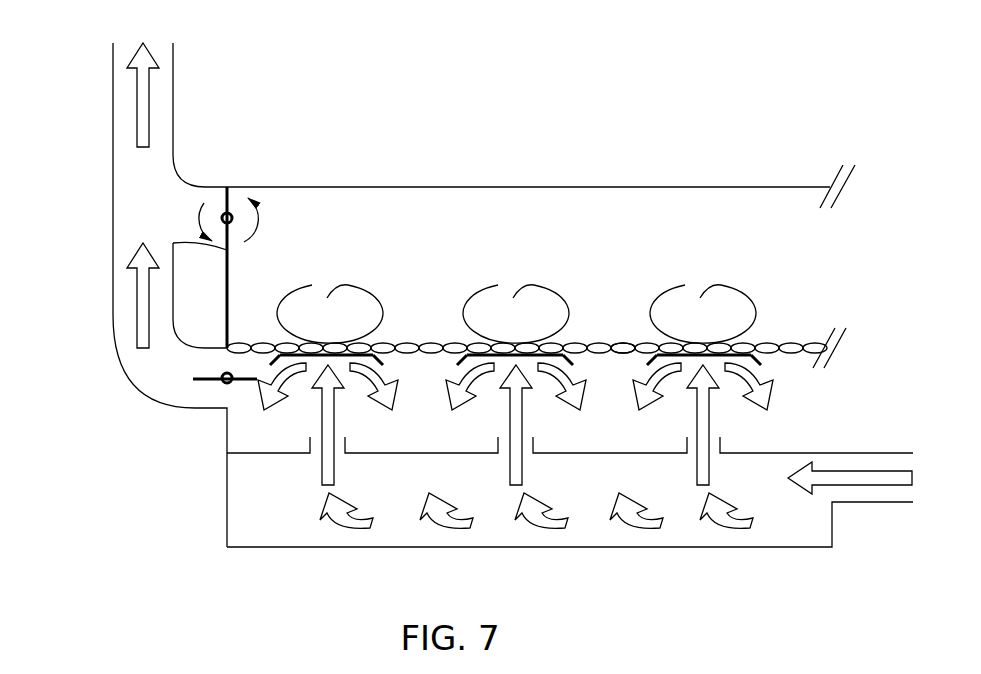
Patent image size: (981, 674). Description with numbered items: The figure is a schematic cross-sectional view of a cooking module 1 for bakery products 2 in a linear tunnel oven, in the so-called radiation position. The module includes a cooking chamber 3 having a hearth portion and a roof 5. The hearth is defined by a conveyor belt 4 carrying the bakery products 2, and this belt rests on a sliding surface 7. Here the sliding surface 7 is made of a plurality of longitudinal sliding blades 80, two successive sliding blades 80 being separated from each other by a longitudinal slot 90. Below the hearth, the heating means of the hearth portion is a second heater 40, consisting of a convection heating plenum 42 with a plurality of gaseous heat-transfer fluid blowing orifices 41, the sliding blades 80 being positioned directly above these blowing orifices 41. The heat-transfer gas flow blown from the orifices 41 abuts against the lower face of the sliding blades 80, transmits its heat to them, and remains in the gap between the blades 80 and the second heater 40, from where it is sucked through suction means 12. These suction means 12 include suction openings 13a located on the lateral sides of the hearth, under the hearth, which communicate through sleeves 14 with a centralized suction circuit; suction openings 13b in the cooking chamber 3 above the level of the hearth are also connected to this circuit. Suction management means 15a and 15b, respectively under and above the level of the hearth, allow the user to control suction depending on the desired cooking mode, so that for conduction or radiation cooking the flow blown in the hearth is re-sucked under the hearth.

The cooking module 1 is at (445, 90).
The bakery products 2 is at (723, 296).
The cooking chamber 3 is at (437, 220).
The conveyor belt 4 is at (790, 341).
The roof 5 is at (713, 175).
The sliding surface 7 is at (265, 361).
The suction means 12 is at (113, 190).
The suction openings 13a is at (226, 399).
The suction openings 13b is at (224, 190).
The sleeves 14 is at (125, 303).
The suction management means 15a is at (194, 380).
The suction management means 15b is at (240, 217).
The second heater 40 is at (301, 548).
The blowing orifices 41 is at (714, 443).
The convection heating plenum 42 is at (667, 518).
The sliding blades 80 is at (760, 362).
The longitudinal slot 90 is at (620, 358).